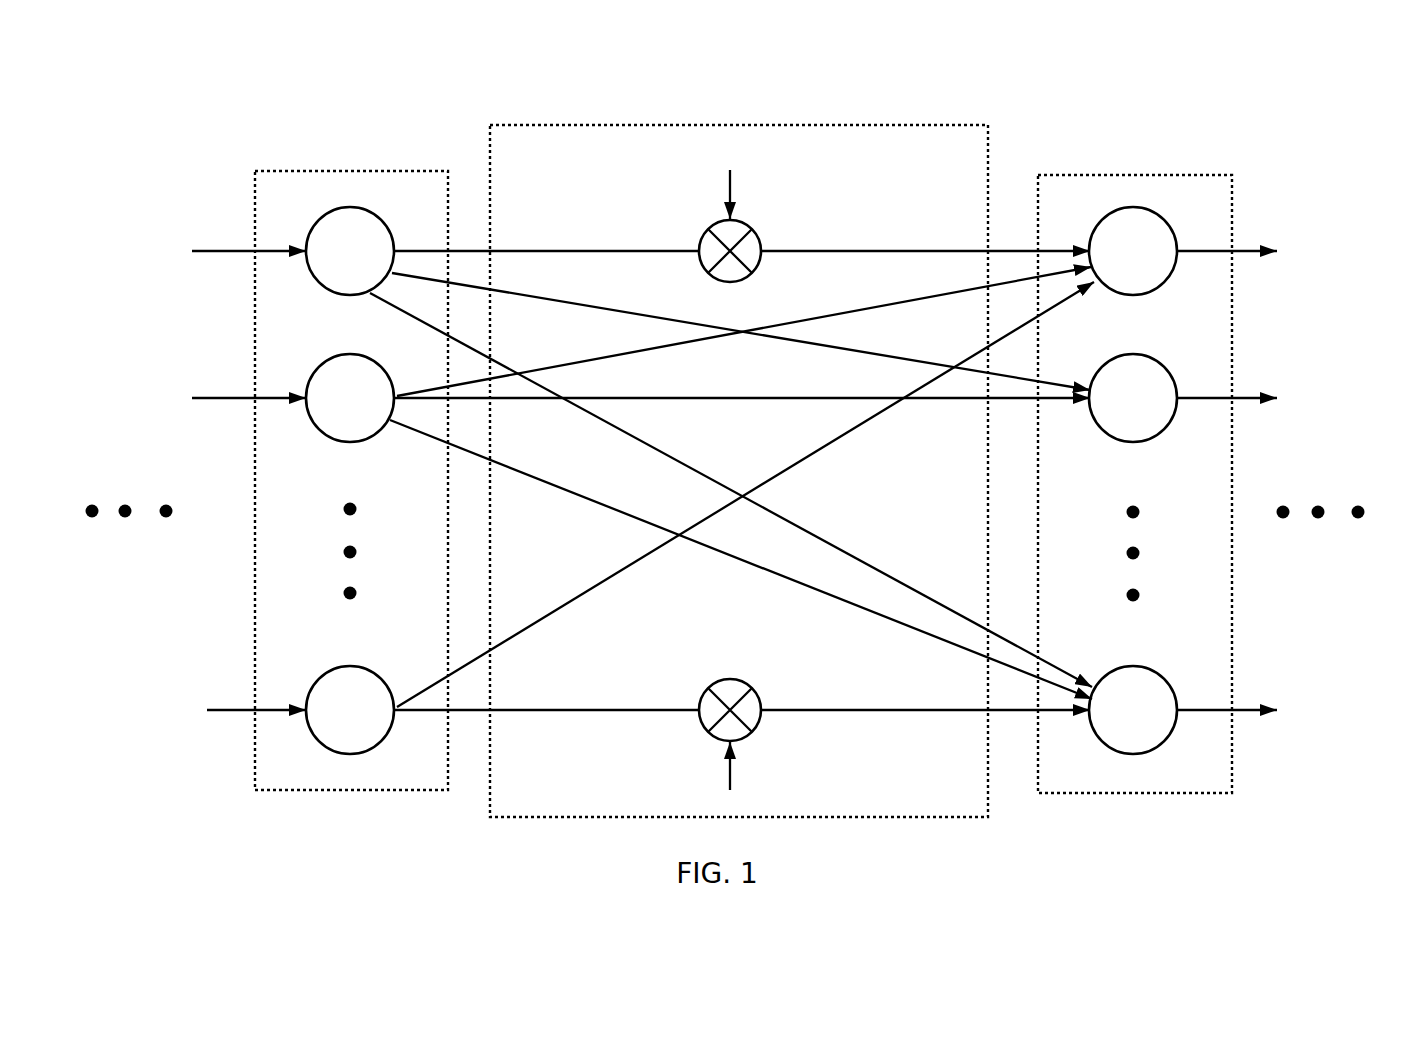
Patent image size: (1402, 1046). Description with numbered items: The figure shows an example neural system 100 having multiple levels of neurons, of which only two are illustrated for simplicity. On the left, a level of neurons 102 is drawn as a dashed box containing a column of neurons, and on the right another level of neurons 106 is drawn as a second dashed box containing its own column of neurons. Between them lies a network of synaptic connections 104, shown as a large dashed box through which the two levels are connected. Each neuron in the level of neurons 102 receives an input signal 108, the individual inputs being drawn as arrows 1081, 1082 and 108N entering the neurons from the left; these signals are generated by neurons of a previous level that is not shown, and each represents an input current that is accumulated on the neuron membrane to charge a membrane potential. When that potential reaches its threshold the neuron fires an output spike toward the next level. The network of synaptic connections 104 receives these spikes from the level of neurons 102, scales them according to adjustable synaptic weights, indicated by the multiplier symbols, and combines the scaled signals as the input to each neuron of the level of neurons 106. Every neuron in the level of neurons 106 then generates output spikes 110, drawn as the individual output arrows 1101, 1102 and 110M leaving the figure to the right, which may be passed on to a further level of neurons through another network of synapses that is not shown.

The neural system 100 is at (205, 118).
The level of neurons 102 is at (305, 171).
The network of synaptic connections 104 is at (920, 125).
The level of neurons 106 is at (1118, 175).
The input signal 108 is at (196, 451).
The input signal X1 1081 is at (165, 208).
The input signal X2 1082 is at (163, 355).
The input signal XN 108N is at (163, 690).
The output spikes 110 is at (1283, 455).
The output signal Y1 1101 is at (1322, 213).
The output signal Y2 1102 is at (1322, 358).
The output signal YM 110M is at (1312, 668).